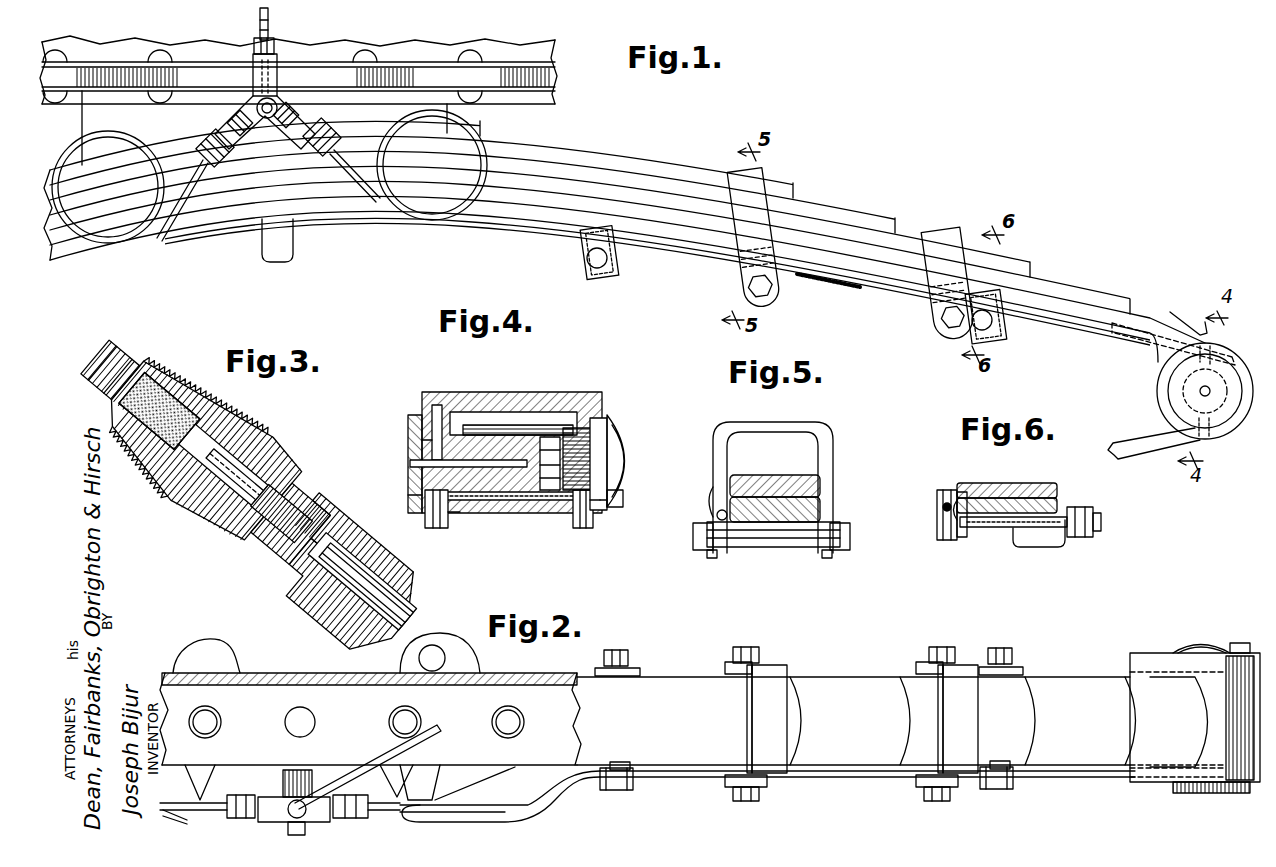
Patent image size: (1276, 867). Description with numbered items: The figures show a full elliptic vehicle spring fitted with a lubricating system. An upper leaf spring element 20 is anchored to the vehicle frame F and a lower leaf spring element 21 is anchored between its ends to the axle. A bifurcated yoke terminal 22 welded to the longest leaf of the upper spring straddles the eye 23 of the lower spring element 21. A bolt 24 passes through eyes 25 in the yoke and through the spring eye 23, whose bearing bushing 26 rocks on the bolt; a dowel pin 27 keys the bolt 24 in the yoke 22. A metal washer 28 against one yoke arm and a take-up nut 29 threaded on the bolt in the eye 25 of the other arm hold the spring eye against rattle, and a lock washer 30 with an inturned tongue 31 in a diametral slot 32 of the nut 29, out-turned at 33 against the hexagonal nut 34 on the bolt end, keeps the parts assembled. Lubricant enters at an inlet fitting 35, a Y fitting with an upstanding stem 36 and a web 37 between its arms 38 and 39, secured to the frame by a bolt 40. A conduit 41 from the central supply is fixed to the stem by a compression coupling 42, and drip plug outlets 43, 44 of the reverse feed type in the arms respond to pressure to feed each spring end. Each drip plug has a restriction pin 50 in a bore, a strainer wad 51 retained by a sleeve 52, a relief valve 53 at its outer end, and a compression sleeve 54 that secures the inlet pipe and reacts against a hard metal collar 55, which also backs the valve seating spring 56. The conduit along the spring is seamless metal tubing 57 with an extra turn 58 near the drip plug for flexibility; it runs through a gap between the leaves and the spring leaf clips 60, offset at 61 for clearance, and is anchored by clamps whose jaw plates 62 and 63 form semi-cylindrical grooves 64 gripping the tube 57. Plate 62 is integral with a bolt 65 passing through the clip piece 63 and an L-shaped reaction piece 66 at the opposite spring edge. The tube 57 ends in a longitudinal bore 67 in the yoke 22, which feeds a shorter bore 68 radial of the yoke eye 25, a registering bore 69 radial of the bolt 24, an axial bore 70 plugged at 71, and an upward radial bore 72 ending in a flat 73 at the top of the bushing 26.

In FIG. 1, the vehicle frame F is at (330, 70).
In FIG. 2, the vehicle frame F is at (370, 716).
In FIG. 1, the upper leaf spring element 20 is at (566, 160).
In FIG. 2, the upper leaf spring element 20 is at (700, 677).
In FIG. 1, the lower leaf spring element 21 is at (1140, 455).
In FIG. 1, the bifurcated yoke terminal 22 is at (1143, 316).
In FIG. 4, the bifurcated yoke terminal 22 is at (548, 405).
In FIG. 2, the bifurcated yoke terminal 22 is at (1148, 655).
In FIG. 4, the spring eye 23 is at (500, 502).
In FIG. 1, the bolt 24 is at (1195, 392).
In FIG. 4, the bolt 24 is at (588, 408).
In FIG. 4, the yoke eyes 25 is at (432, 526).
In FIG. 4, the bearing bushing 26 is at (476, 502).
In FIG. 4, the dowel pin 27 is at (410, 500).
In FIG. 4, the metal washer 28 is at (448, 524).
In FIG. 4, the take-up nut 29 is at (552, 492).
In FIG. 4, the lock washer 30 is at (616, 507).
In FIG. 4, the inturned tongue 31 is at (592, 512).
In FIG. 4, the diametral slot 32 is at (610, 422).
In FIG. 4, the out-turned portion 33 is at (625, 456).
In FIG. 2, the out-turned portion 33 is at (1210, 645).
In FIG. 4, the hexagonal nut 34 is at (622, 494).
In FIG. 2, the hexagonal nut 34 is at (1240, 643).
In FIG. 1, the inlet fitting 35 is at (278, 80).
In FIG. 1, the upstanding stem 36 is at (253, 60).
In FIG. 1, the web 37 is at (270, 120).
In FIG. 1, the arm of Y fitting 38 is at (233, 112).
In FIG. 2, the arm of Y fitting 38 is at (265, 820).
In FIG. 1, the arm of Y fitting 39 is at (296, 110).
In FIG. 2, the arm of Y fitting 39 is at (348, 820).
In FIG. 1, the bolt 40 is at (262, 84).
In FIG. 1, the conduit 41 is at (268, 16).
In FIG. 2, the conduit 41 is at (375, 758).
In FIG. 1, the compression coupling 42 is at (254, 42).
In FIG. 2, the compression coupling 42 is at (290, 774).
In FIG. 1, the drip plug outlet 43 is at (205, 138).
In FIG. 1, the drip plug outlet 44 is at (322, 128).
In FIG. 3, the restriction pin 50 is at (233, 442).
In FIG. 3, the strainer wad 51 is at (148, 408).
In FIG. 3, the sleeve 52 is at (103, 370).
In FIG. 3, the relief valve 53 is at (292, 496).
In FIG. 3, the compression sleeve 54 is at (327, 603).
In FIG. 3, the hard metal collar 55 is at (296, 590).
In FIG. 3, the valve seating spring 56 is at (302, 500).
In FIG. 1, the seamless metal tubing 57 is at (492, 228).
In FIG. 5, the seamless metal tubing 57 is at (716, 514).
In FIG. 6, the seamless metal tubing 57 is at (945, 505).
In FIG. 2, the seamless metal tubing 57 is at (700, 782).
In FIG. 1, the extra turn 58 is at (132, 134).
In FIG. 2, the extra turn 58 is at (172, 822).
In FIG. 1, the spring leaf clips 60 is at (762, 184).
In FIG. 5, the spring leaf clips 60 is at (826, 450).
In FIG. 2, the spring leaf clips 60 is at (752, 734).
In FIG. 5, the offset 61 is at (716, 500).
In FIG. 2, the offset 61 is at (762, 792).
In FIG. 1, the outer jaw plate 62 is at (583, 254).
In FIG. 6, the outer jaw plate 62 is at (940, 535).
In FIG. 2, the outer jaw plate 62 is at (614, 790).
In FIG. 6, the clip piece 63 is at (962, 538).
In FIG. 2, the clip piece 63 is at (616, 764).
In FIG. 6, the semi-cylindrical grooves 64 is at (943, 510).
In FIG. 6, the bolt 65 is at (1000, 528).
In FIG. 1, the L-shaped reaction piece 66 is at (612, 272).
In FIG. 5, the L-shaped reaction piece 66 is at (771, 540).
In FIG. 6, the L-shaped reaction piece 66 is at (1058, 547).
In FIG. 2, the L-shaped reaction piece 66 is at (640, 670).
In FIG. 1, the longitudinal bore 67 is at (1188, 330).
In FIG. 2, the longitudinal bore 67 is at (1172, 778).
In FIG. 1, the shorter bore 68 is at (1200, 352).
In FIG. 4, the shorter bore 68 is at (432, 428).
In FIG. 2, the shorter bore 68 is at (1220, 788).
In FIG. 4, the registering bore 69 is at (428, 454).
In FIG. 4, the axial bore 70 is at (440, 405).
In FIG. 4, the plug 71 is at (412, 466).
In FIG. 4, the radial bore 72 is at (478, 415).
In FIG. 4, the flat 73 is at (514, 422).